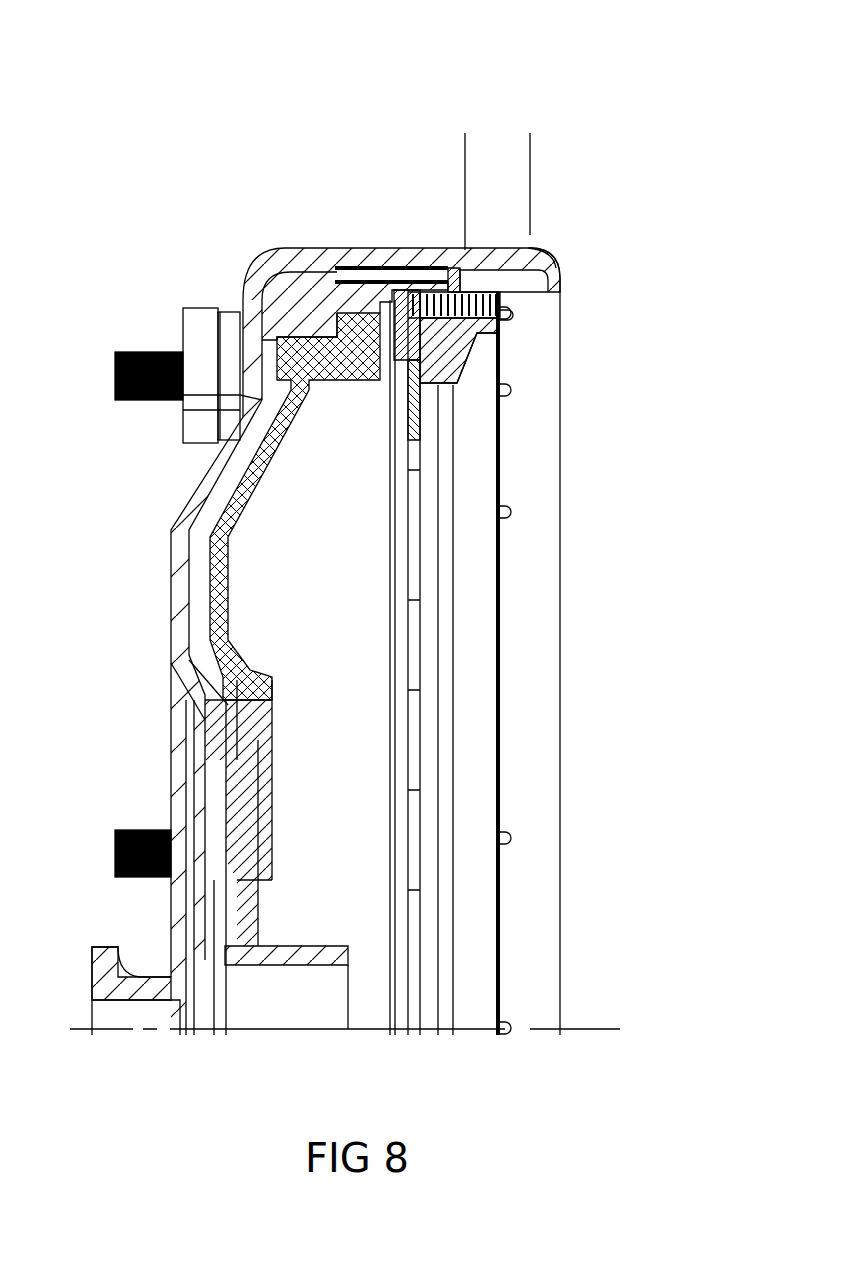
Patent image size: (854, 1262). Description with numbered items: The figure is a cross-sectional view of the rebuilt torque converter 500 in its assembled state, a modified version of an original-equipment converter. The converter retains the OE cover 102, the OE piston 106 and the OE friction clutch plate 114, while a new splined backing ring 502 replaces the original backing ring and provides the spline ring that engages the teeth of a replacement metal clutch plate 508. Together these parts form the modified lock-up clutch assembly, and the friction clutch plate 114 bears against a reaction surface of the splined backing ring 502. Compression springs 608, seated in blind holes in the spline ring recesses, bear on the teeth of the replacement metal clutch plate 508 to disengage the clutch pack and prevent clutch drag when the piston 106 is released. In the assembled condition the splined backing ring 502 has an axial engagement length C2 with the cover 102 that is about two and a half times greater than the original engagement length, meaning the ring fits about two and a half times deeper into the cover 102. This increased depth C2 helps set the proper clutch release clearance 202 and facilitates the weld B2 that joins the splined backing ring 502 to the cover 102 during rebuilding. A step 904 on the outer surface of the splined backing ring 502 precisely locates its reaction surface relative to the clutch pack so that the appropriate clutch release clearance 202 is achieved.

The rebuilt torque converter 500 is at (696, 52).
The splined backing ring 502 is at (596, 578).
The OE cover 102 is at (258, 270).
The replacement metal clutch plate 508 is at (335, 268).
The OE piston 106 is at (265, 455).
The clutch release clearance 202 is at (480, 550).
The OE friction clutch plate 114 is at (420, 400).
The compression springs 608 is at (512, 316).
The step 904 is at (550, 270).
The axial engagement length C2 is at (378, 162).
The weld B2 is at (548, 262).